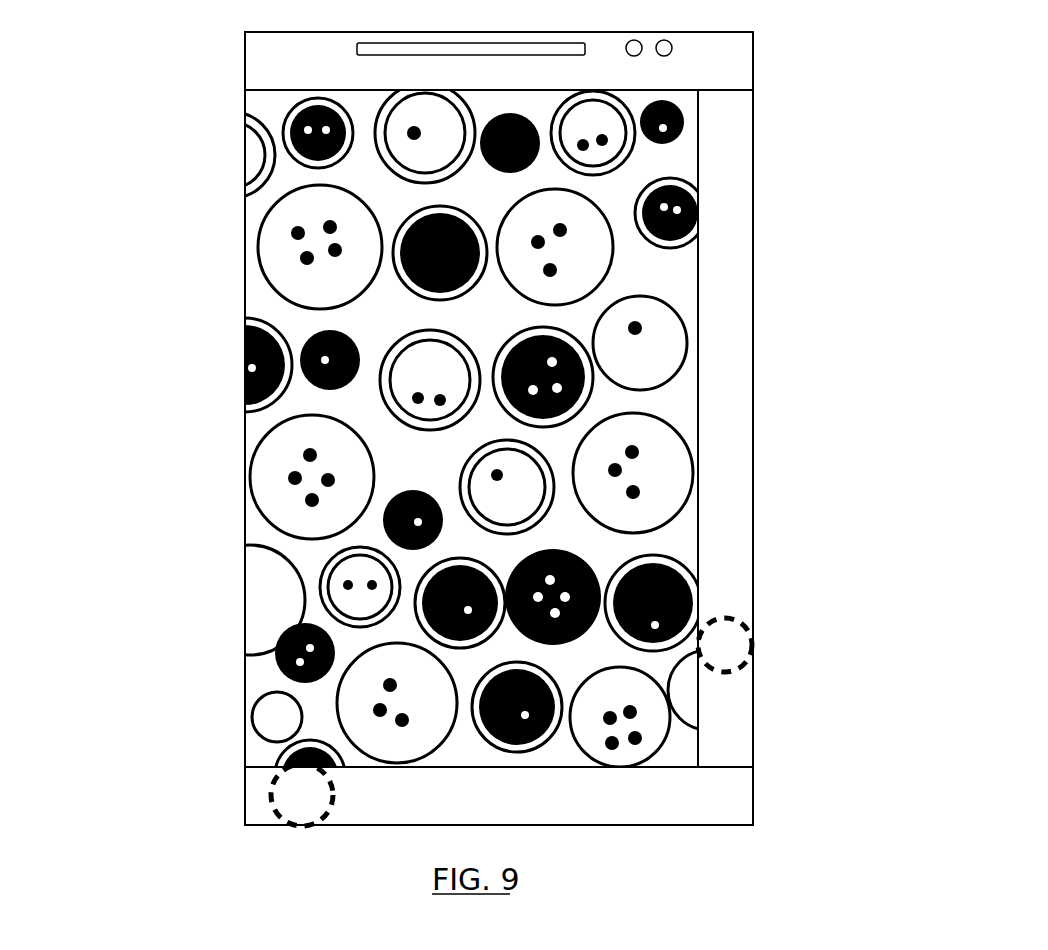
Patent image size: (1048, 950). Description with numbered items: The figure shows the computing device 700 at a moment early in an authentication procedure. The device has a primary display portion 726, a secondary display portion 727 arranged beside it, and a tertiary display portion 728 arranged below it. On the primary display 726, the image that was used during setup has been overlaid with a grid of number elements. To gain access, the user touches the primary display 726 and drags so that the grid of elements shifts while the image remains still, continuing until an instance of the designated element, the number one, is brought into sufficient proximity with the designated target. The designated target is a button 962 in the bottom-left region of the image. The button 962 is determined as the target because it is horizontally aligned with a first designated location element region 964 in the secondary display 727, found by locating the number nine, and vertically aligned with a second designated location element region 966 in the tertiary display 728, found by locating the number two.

The computing device 700 is at (940, 135).
The primary display portion 726 is at (245, 285).
The secondary display portion 727 is at (755, 540).
The tertiary display portion 728 is at (245, 792).
The button 962 is at (285, 652).
The first designated location element region 964 is at (756, 640).
The second designated location element region 966 is at (303, 822).